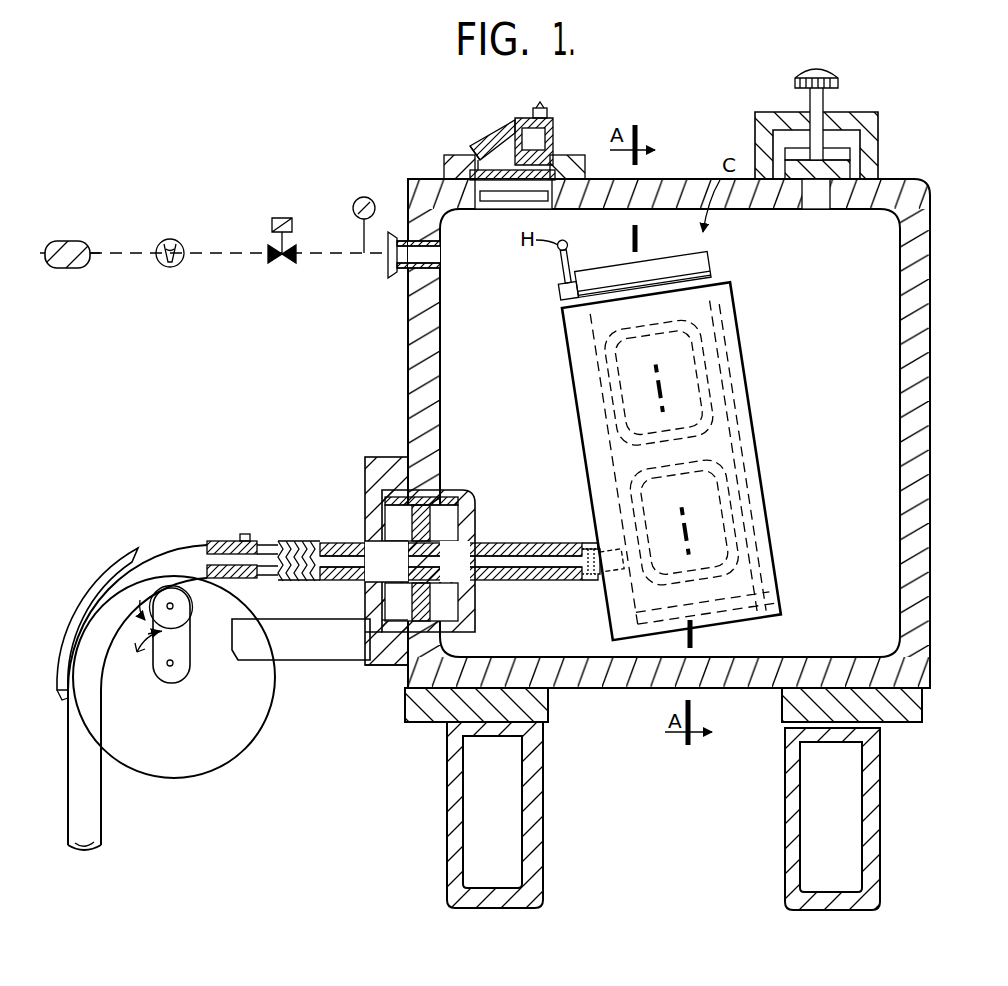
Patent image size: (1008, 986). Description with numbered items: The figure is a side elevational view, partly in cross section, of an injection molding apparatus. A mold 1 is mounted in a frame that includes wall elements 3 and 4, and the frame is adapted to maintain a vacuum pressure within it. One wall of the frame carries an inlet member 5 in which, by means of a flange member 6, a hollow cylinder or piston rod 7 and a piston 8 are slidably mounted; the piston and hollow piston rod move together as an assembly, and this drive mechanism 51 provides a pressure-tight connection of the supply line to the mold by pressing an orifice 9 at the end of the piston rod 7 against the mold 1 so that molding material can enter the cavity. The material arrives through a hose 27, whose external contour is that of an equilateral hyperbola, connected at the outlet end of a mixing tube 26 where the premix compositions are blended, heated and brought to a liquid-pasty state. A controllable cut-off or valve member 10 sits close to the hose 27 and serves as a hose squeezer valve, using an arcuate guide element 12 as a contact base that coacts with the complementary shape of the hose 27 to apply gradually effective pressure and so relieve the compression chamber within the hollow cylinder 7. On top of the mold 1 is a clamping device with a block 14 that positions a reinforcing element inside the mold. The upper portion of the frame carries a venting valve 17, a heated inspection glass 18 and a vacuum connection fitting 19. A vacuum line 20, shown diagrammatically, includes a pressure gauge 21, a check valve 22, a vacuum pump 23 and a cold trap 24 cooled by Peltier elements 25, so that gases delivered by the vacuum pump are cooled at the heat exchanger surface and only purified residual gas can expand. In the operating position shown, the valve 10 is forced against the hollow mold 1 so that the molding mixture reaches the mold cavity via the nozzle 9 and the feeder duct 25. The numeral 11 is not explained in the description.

The mold 1 is at (719, 420).
The wall element 3 is at (597, 684).
The wall element 4 is at (694, 186).
The inlet member 5 is at (398, 645).
The flange member 6 is at (375, 668).
The hollow cylinder or piston rod 7 is at (345, 545).
The piston 8 is at (462, 496).
The orifice 9 is at (596, 590).
The valve member 10 is at (280, 706).
The coupling 11 is at (222, 540).
The arcuate guide element 12 is at (118, 558).
The block 14 is at (712, 266).
The venting valve 17 is at (760, 132).
The heated inspection glass 18 is at (495, 165).
The vacuum connection fitting 19 is at (400, 235).
The vacuum line 20 is at (222, 252).
The pressure gauge 21 is at (364, 197).
The check valve 22 is at (282, 218).
The vacuum pump 23 is at (170, 240).
The cold trap 24 is at (68, 242).
The Peltier elements 25 is at (618, 604).
The mixing tube 26 is at (708, 436).
The hose 27 is at (100, 600).
The drive mechanism 51 is at (382, 452).